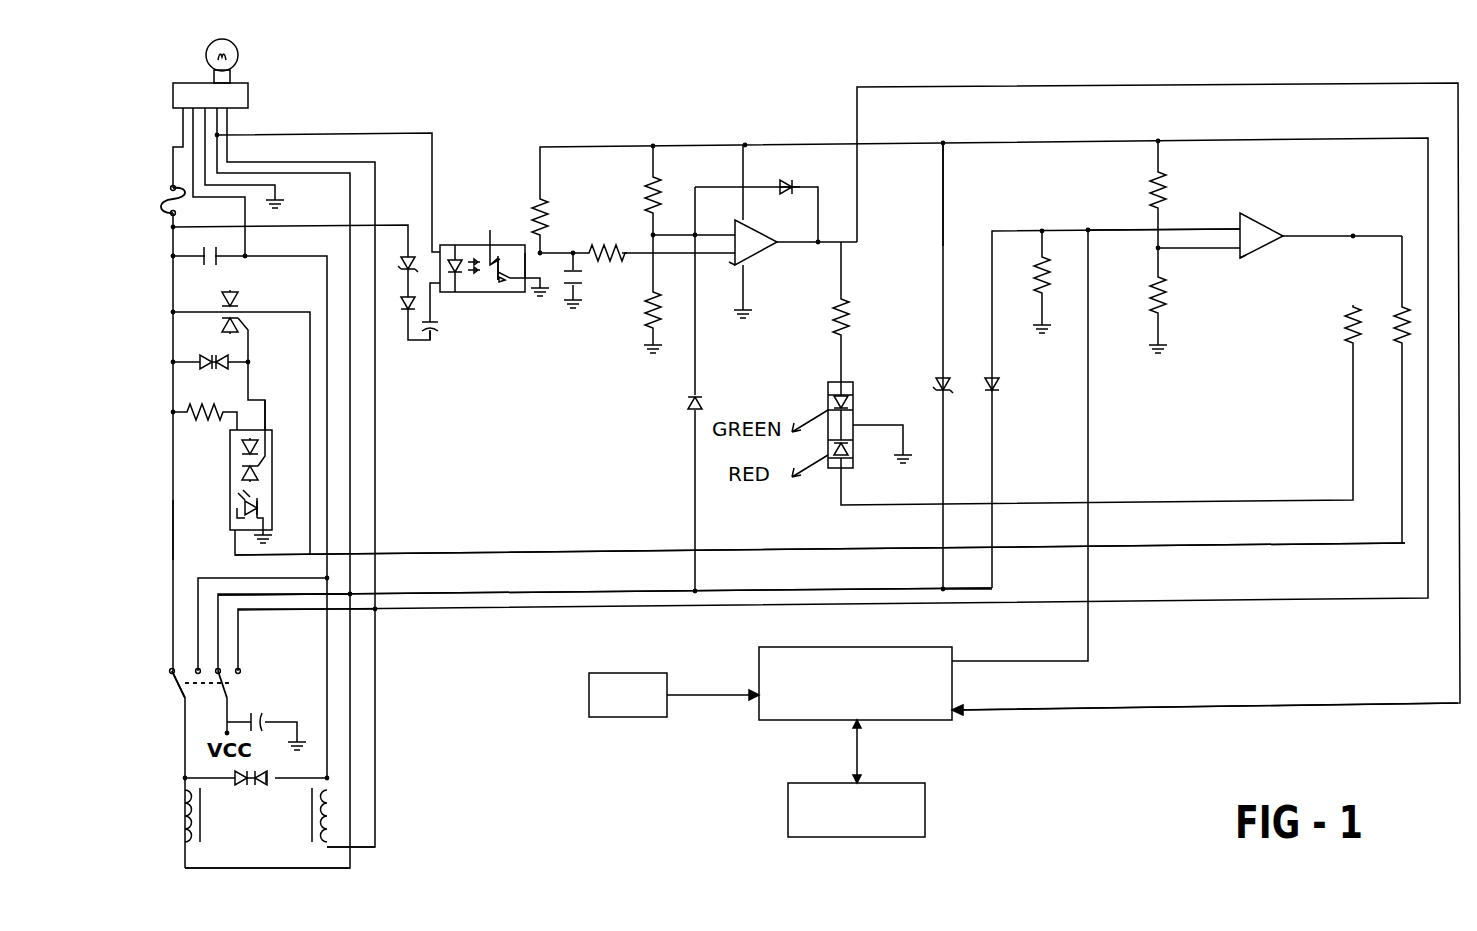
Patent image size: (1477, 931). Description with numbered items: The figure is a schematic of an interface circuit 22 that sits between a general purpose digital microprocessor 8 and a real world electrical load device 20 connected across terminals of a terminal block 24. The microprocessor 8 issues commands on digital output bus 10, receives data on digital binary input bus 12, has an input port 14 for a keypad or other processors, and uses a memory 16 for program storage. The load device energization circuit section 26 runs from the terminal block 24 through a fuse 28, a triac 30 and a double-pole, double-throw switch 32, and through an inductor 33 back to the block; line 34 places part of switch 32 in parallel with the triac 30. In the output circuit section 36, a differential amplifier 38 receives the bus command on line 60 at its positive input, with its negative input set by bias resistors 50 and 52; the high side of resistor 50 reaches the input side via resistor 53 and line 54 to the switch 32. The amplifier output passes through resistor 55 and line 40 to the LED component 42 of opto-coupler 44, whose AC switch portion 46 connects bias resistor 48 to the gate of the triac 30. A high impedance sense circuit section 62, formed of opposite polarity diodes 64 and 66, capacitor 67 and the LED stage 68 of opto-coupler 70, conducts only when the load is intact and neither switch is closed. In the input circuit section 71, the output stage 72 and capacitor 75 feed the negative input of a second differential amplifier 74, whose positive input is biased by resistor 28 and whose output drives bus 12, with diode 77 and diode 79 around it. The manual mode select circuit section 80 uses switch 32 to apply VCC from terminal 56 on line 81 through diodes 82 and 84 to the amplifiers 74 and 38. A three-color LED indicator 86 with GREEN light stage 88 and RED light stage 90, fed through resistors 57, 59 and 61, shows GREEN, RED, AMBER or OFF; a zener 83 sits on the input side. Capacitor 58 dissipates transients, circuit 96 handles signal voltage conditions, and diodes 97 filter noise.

The microprocessor 8 is at (770, 647).
The digital output bus 10 is at (952, 660).
The digital binary input bus 12 is at (1050, 712).
The input port 14 is at (589, 690).
The memory 16 is at (788, 822).
The load device 20 is at (238, 52).
The circuit 22 is at (688, 108).
The terminal block 24 is at (248, 96).
The load device energization circuit section 26 is at (170, 256).
The fuse 28 is at (170, 188).
The triac 30 is at (237, 296).
The double-pole, double-throw switch 32 is at (170, 683).
The inductor 33 is at (183, 818).
The line 34 is at (173, 544).
The output circuit section 36 is at (1285, 225).
The differential amplifier 38 is at (1265, 248).
The line 40 is at (483, 552).
The LED component 42 is at (244, 512).
The opto-coupler 44 is at (272, 480).
The AC switch portion 46 is at (240, 470).
The bias resistor 48 is at (205, 415).
The bias resistor 50 is at (1152, 192).
The bias resistor 52 is at (1164, 300).
The resistor 53 is at (546, 215).
The line 54 is at (942, 227).
The resistor 55 is at (1397, 330).
The terminal 56 is at (224, 730).
The resistor 57 is at (1347, 328).
The capacitor 58 is at (262, 720).
The resistor 59 is at (1035, 268).
The line 60 is at (1125, 232).
The resistor 61 is at (847, 318).
The sense circuit section 62 is at (450, 160).
The diode 64 is at (408, 255).
The diode 66 is at (404, 308).
The capacitor 67 is at (438, 326).
The LED stage 68 is at (455, 250).
The opto-coupler 70 is at (480, 292).
The input circuit section 71 is at (732, 262).
The output stage 72 is at (500, 258).
The differential amplifier 74 is at (758, 255).
The capacitor 75 is at (582, 278).
The diode 77 is at (655, 190).
The diode 79 is at (790, 180).
The manual mode select circuit section 80 is at (187, 658).
The line 81 is at (495, 592).
The diode 82 is at (940, 380).
The zener diode 83 is at (688, 404).
The diode 84 is at (999, 384).
The three-color LED indicator 86 is at (853, 410).
The GREEN light stage 88 is at (828, 396).
The RED light stage 90 is at (845, 460).
The circuit 96 is at (194, 358).
The diodes 97 is at (245, 788).